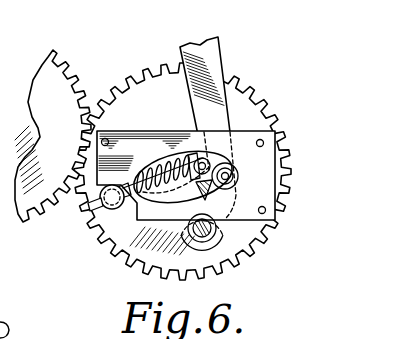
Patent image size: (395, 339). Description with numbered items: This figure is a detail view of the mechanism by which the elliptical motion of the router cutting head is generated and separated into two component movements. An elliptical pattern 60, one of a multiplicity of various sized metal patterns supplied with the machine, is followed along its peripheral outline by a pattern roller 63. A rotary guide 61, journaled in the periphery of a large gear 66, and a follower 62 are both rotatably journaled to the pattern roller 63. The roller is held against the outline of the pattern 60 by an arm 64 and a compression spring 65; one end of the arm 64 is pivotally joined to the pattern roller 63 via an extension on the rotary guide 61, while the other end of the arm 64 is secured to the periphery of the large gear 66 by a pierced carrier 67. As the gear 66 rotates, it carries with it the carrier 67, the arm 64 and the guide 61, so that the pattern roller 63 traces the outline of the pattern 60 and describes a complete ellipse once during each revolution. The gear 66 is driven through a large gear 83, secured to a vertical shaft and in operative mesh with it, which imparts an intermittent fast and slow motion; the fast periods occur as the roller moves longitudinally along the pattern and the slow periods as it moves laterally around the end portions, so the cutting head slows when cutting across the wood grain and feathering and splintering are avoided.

The elliptical pattern 60 is at (189, 142).
The rotary guide 61 is at (226, 230).
The follower 62 is at (212, 52).
The pattern roller 63 is at (238, 177).
The arm 64 is at (90, 207).
The compression spring 65 is at (161, 190).
The large gear 66 is at (140, 258).
The pierced carrier 67 is at (111, 209).
The large gear 83 is at (67, 85).